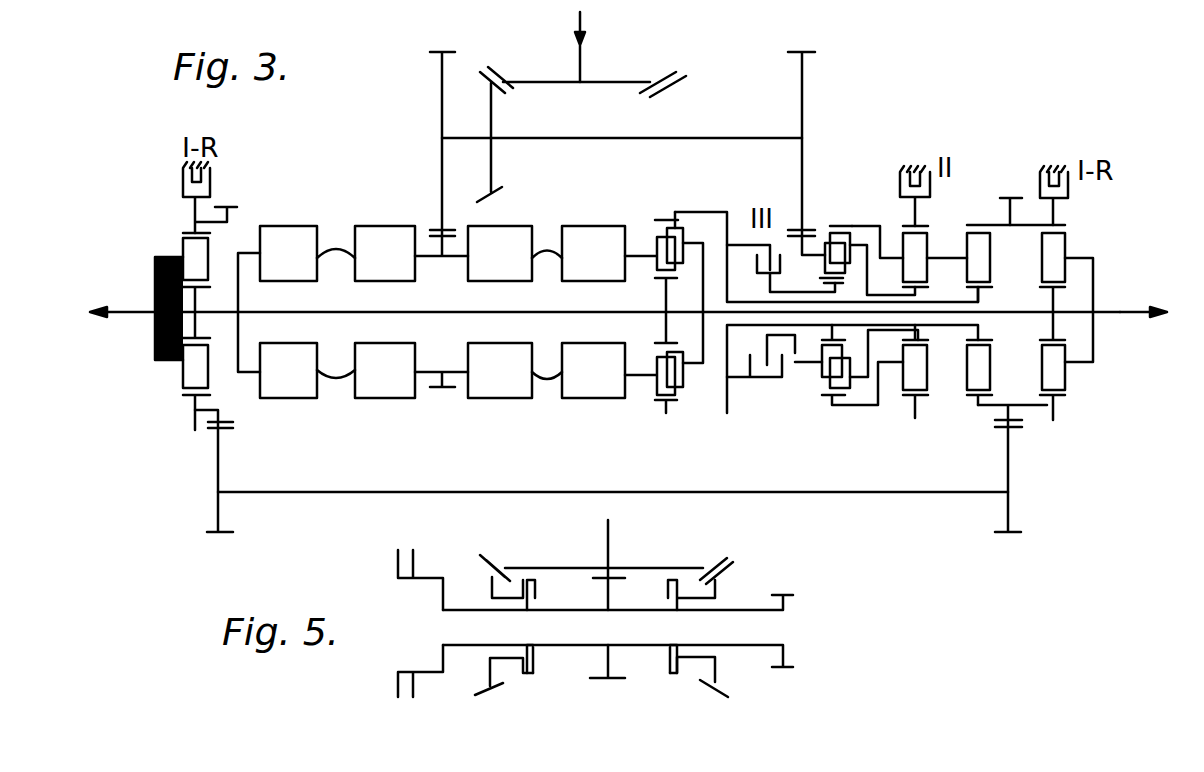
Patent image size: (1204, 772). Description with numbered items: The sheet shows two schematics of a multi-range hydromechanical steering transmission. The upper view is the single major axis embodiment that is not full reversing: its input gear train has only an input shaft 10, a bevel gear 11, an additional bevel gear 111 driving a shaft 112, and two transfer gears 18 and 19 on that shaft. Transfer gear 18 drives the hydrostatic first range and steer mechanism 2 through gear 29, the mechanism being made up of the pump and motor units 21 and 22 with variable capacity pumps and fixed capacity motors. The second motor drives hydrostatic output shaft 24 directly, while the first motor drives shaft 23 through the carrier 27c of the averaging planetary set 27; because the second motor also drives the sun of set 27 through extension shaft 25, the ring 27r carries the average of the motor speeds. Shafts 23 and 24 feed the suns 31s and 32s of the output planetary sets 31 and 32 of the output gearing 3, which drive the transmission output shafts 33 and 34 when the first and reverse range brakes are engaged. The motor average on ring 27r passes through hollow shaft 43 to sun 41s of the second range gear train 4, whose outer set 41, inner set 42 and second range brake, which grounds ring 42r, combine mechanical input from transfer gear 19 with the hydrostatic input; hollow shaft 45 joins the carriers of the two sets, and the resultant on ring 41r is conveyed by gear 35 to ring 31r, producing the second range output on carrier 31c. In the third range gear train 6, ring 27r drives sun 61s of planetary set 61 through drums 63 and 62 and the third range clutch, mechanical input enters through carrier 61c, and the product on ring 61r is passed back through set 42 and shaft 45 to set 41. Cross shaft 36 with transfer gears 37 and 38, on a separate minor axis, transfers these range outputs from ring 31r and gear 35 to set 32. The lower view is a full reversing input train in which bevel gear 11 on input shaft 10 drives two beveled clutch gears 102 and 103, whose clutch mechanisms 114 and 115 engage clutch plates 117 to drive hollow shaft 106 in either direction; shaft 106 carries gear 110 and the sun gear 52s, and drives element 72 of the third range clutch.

In FIG. 3, the input shaft 10 is at (582, 46).
In FIG. 5, the input shaft 10 is at (613, 532).
In FIG. 3, the bevel gear 11 is at (622, 82).
In FIG. 5, the bevel gear 11 is at (650, 567).
In FIG. 3, the additional bevel gear 111 is at (491, 118).
In FIG. 3, the shaft 112 is at (693, 138).
In FIG. 3, the transfer gear 18 is at (442, 170).
In FIG. 3, the transfer gear 19 is at (804, 118).
In FIG. 3, the first range and steer mechanism 2 is at (442, 417).
In FIG. 3, the hydrostatic pump and motor unit 21 is at (623, 418).
In FIG. 3, the hydrostatic pump and motor unit 22 is at (410, 418).
In FIG. 3, the hydrostatic output shaft 23 is at (1010, 313).
In FIG. 3, the hydrostatic output shaft 24 is at (218, 312).
In FIG. 3, the extension shaft 25 is at (417, 313).
In FIG. 3, the planetary gear set 27 is at (653, 408).
In FIG. 3, the carrier of planetary set 27 27c is at (657, 237).
In FIG. 3, the ring of planetary set 27 27r is at (656, 219).
In FIG. 3, the gear 29 is at (447, 257).
In FIG. 3, the output gears 3 is at (1097, 383).
In FIG. 3, the output planetary set 31 is at (1065, 398).
In FIG. 3, the carrier of planetary set 31 31c is at (1100, 250).
In FIG. 3, the ring of planetary set 31 31r is at (1058, 224).
In FIG. 3, the sun gear of planetary set 31 31s is at (1053, 312).
In FIG. 3, the output planetary set 32 is at (185, 415).
In FIG. 3, the sun gear of planetary set 32 32s is at (192, 313).
In FIG. 3, the transmission output shaft 33 is at (1120, 312).
In FIG. 3, the transmission output shaft 34 is at (141, 294).
In FIG. 3, the gear 35 is at (1010, 224).
In FIG. 3, the cross shaft 36 is at (927, 492).
In FIG. 3, the cross shaft transfer gear 37 is at (1010, 515).
In FIG. 3, the cross shaft transfer gear 38 is at (218, 515).
In FIG. 3, the second range gear train 4 is at (977, 442).
In FIG. 3, the second range outer planetary set 41 is at (963, 400).
In FIG. 3, the ring of planetary set 41 41r is at (970, 223).
In FIG. 3, the sun gear of planetary set 41 41s is at (993, 287).
In FIG. 3, the second range inner planetary set 42 is at (897, 400).
In FIG. 3, the ring of planetary set 42 42r is at (908, 222).
In FIG. 3, the hollow shaft 43 is at (753, 302).
In FIG. 3, the second range interconnecting hollow shaft 45 is at (938, 258).
In FIG. 3, the third range gear train 6 is at (865, 428).
In FIG. 3, the third range planetary set 61 is at (825, 400).
In FIG. 3, the carrier of planetary set 61 61c is at (803, 255).
In FIG. 3, the ring of planetary set 61 61r is at (838, 227).
In FIG. 3, the sun gear of planetary set 61 61s is at (814, 280).
In FIG. 3, the drum 62 is at (797, 335).
In FIG. 3, the drum 63 is at (732, 243).
In FIG. 5, the beveled clutch gear 102 is at (490, 577).
In FIG. 5, the beveled clutch gear 103 is at (717, 583).
In FIG. 5, the hollow shaft 106 is at (740, 610).
In FIG. 5, the gear 110 is at (613, 598).
In FIG. 5, the clutch mechanism 114 is at (523, 675).
In FIG. 5, the clutch mechanism 115 is at (670, 675).
In FIG. 5, the clutch plates 117 is at (673, 650).
In FIG. 5, the sun gear of planetary set 52 52s is at (790, 605).
In FIG. 5, the third range clutch structure element 72 is at (440, 580).